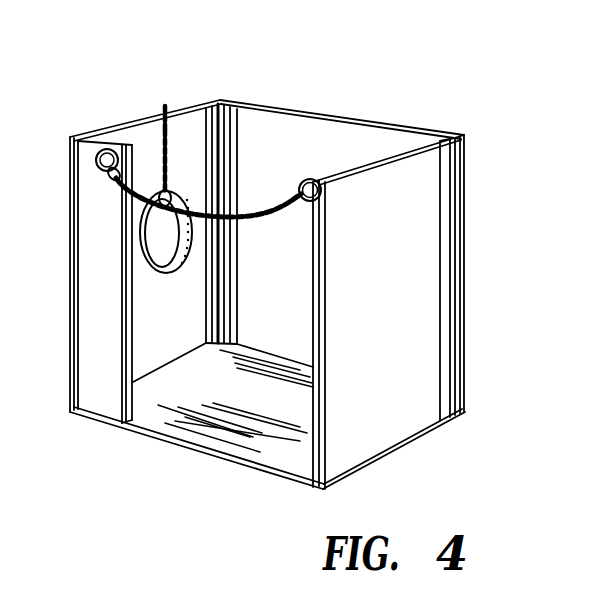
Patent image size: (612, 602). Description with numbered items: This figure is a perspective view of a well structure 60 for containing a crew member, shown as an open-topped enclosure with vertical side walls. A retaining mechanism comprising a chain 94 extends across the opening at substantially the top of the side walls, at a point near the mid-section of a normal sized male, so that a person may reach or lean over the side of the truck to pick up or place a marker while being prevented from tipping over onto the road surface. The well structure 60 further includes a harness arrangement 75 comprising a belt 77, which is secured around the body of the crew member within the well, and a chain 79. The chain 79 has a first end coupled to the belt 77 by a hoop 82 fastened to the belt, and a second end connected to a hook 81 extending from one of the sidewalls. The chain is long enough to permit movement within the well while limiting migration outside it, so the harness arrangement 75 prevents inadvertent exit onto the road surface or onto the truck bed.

The well structure 60 is at (146, 463).
The harness arrangement 75 is at (196, 113).
The belt 77 is at (176, 276).
The chain 79 is at (180, 157).
The hook 81 is at (166, 102).
The hoop 82 is at (200, 192).
The chain 94 is at (272, 213).